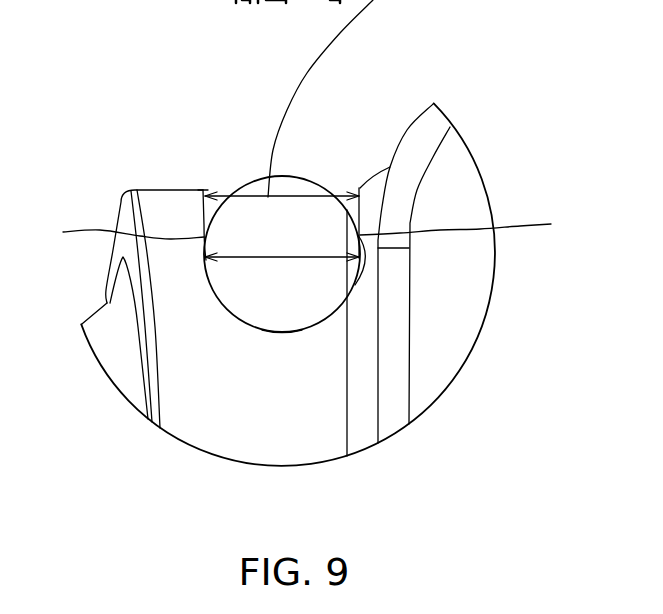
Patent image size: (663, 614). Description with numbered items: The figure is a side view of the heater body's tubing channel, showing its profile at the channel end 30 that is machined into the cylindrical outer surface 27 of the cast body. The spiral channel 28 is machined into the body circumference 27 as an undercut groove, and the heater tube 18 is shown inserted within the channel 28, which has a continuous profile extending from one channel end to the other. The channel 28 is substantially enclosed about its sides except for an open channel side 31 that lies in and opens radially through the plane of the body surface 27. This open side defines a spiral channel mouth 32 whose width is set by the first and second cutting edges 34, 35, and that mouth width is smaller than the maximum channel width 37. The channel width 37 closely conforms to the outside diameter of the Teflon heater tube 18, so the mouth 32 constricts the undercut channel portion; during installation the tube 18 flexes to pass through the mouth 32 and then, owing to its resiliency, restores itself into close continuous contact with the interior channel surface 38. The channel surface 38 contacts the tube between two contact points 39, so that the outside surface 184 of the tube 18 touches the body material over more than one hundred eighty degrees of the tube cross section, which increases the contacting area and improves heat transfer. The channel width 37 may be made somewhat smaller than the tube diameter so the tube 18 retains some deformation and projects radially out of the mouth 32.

The heater tube 18 is at (292, 177).
The cylindrical outer surface 27 is at (162, 200).
The spiral channel 28 is at (260, 331).
The channel end 30 is at (207, 199).
The open channel side 31 is at (353, 170).
The spiral channel mouth 32 is at (254, 133).
The first cutting edge 34 is at (204, 189).
The second cutting edge 35 is at (434, 103).
The channel width 37 is at (305, 258).
The interior channel surface 38 is at (147, 414).
The contact points 39 is at (303, 237).
The outside surface 184 is at (283, 335).